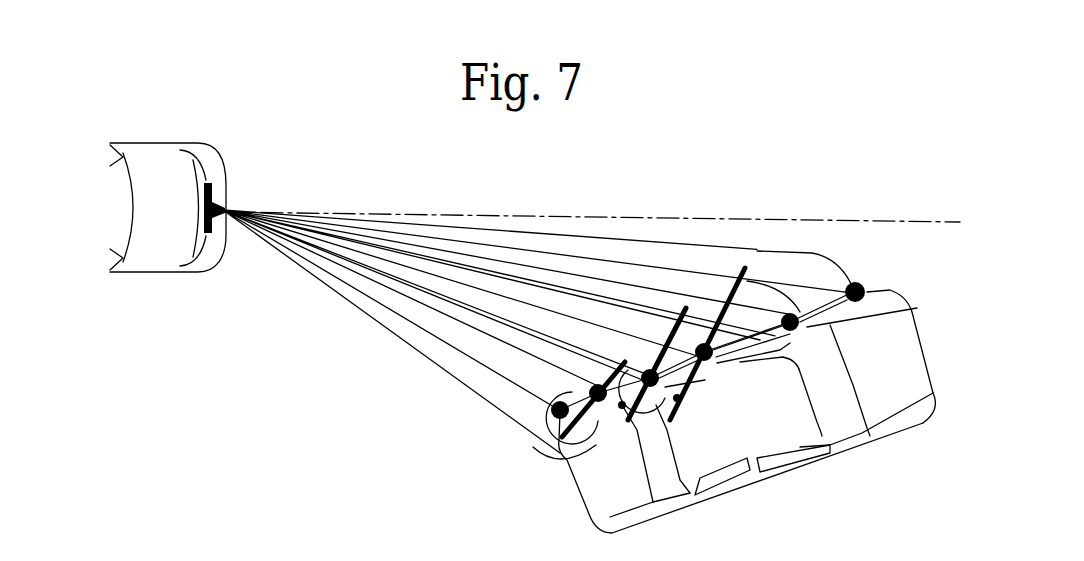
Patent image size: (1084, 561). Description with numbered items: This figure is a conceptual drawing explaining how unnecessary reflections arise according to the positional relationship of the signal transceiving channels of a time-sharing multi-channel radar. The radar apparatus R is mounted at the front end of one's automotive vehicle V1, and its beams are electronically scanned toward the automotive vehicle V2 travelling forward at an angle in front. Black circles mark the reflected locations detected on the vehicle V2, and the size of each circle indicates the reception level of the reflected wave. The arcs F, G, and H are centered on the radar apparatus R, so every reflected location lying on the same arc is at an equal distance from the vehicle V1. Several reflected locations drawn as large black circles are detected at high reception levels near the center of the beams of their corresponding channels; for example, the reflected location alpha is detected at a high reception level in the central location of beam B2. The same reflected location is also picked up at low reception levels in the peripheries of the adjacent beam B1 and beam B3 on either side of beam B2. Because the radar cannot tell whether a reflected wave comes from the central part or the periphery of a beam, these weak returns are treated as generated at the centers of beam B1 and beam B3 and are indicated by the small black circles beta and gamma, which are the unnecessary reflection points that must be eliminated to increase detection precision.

The one's automotive vehicle V1 is at (147, 262).
The automotive vehicle at an angle in front V2 is at (757, 457).
The radar apparatus R is at (224, 197).
The beam B1 is at (533, 447).
The beam B2 is at (617, 427).
The beam B3 is at (661, 417).
The arc F is at (602, 382).
The arc G is at (663, 348).
The arc H is at (713, 328).
The reflected location a alpha is at (573, 368).
The black circle β beta is at (582, 470).
The black circle γ gamma is at (627, 372).